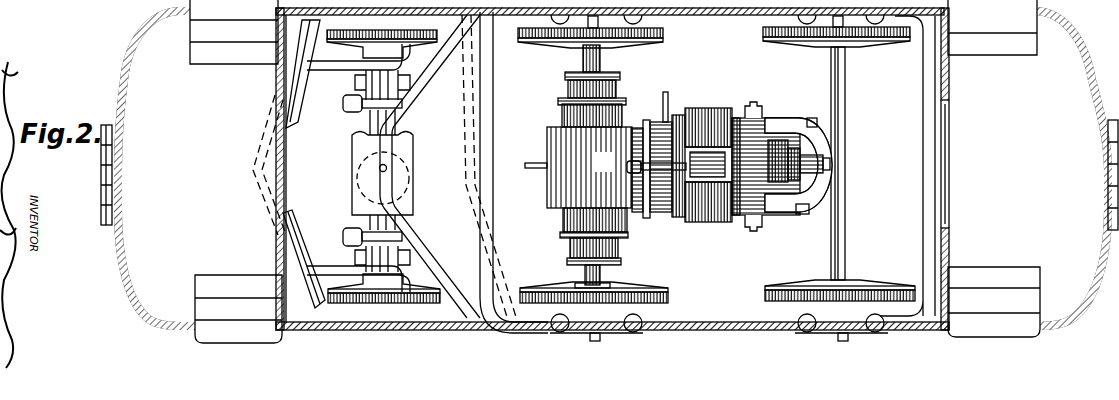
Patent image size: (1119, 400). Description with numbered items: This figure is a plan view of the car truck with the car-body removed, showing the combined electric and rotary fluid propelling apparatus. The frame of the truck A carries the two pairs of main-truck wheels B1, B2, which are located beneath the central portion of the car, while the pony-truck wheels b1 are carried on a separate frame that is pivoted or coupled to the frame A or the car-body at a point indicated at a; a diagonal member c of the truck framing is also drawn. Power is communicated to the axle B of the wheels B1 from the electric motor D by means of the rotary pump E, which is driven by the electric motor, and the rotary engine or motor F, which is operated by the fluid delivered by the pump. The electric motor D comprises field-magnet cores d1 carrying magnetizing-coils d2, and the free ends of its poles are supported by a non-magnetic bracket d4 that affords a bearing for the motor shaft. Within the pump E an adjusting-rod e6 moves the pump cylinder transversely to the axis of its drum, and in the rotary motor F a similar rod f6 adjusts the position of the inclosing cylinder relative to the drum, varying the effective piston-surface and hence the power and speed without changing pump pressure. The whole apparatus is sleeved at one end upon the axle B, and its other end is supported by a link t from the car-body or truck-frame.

The frame of the truck A is at (437, 60).
The pivot coupling a is at (387, 177).
The diagonal frame bar c is at (427, 232).
The pony-truck wheels b1 is at (388, 35).
The axle B is at (583, 63).
The main-truck wheels B1 is at (640, 289).
The main-truck wheels B2 is at (870, 295).
The rotary engine or motor F is at (589, 180).
The adjusting rod f6 is at (545, 166).
The rotary pump E is at (660, 140).
The adjusting-rod e6 is at (667, 101).
The magnetizing-coils d2 is at (707, 231).
The field-magnet cores d1 is at (736, 118).
The link t is at (757, 110).
The electric motor D is at (766, 128).
The non-magnetic bracket d4 is at (801, 206).